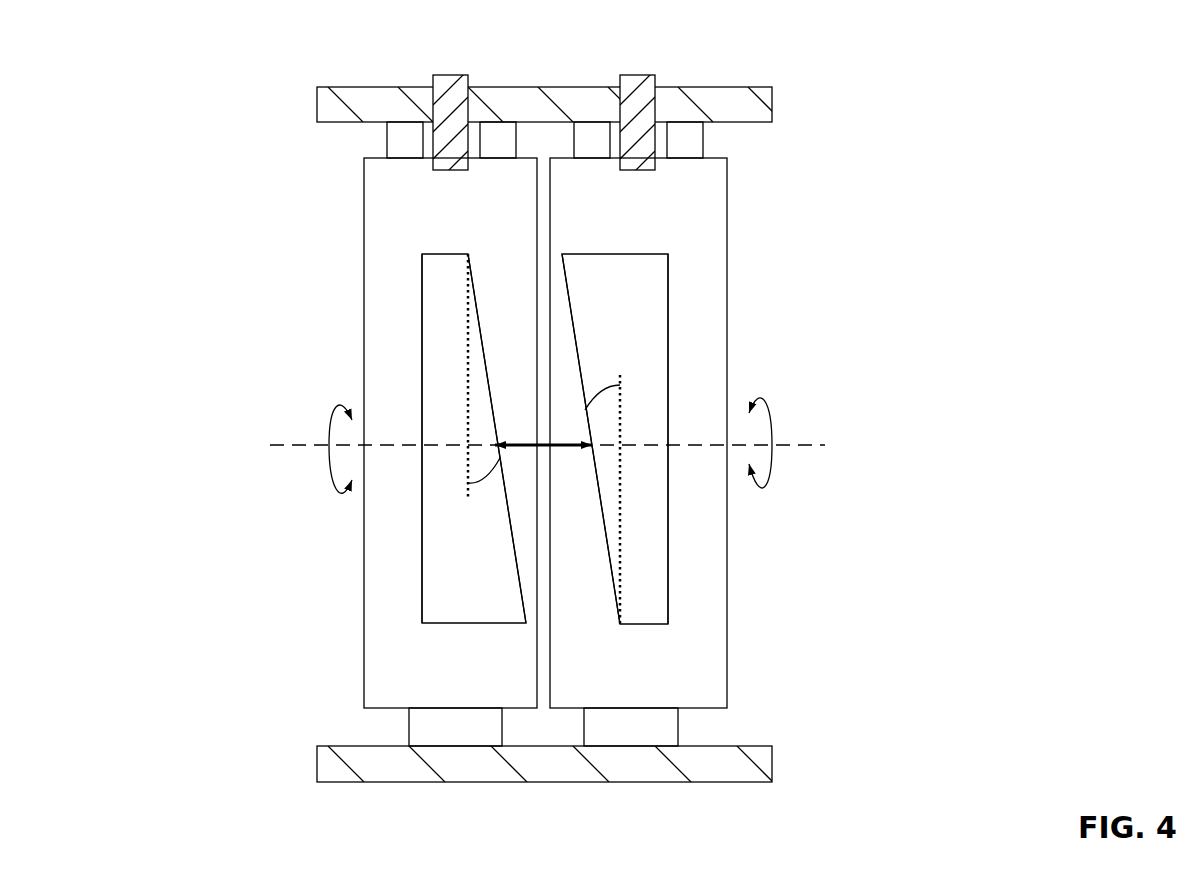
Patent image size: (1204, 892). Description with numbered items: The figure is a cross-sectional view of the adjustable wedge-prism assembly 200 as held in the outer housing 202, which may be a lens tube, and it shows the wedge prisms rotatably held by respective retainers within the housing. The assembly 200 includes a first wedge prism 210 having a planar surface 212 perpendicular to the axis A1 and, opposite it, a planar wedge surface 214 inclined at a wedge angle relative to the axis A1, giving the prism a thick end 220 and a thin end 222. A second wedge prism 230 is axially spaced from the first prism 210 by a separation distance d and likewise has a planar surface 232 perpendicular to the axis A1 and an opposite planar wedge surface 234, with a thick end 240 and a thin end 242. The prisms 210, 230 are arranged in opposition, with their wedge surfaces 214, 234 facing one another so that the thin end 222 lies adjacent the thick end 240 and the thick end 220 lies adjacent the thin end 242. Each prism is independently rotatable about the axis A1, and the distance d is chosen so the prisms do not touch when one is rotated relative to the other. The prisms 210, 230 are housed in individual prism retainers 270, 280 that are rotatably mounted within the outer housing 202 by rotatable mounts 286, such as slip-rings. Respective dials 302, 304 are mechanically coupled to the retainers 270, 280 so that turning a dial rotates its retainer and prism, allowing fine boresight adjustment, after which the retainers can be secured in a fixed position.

The adjustable wedge-prism assembly 200 is at (927, 120).
The outer housing 202 is at (527, 87).
The first wedge prism 210 is at (433, 387).
The planar surface 212 is at (422, 340).
The planar wedge surface 214 is at (478, 313).
The thick end 220 is at (443, 638).
The thin end 222 is at (421, 240).
The second wedge prism 230 is at (643, 563).
The planar surface 232 is at (668, 517).
The planar wedge surface 234 is at (607, 553).
The thick end 240 is at (632, 242).
The thin end 242 is at (655, 637).
The prism retainer 270 is at (364, 530).
The prism retainer 280 is at (727, 372).
The rotatable mounts 286 is at (385, 133).
The dial 302 is at (446, 87).
The dial 304 is at (645, 98).
The axis A1 is at (303, 447).
The separation distance d is at (525, 440).